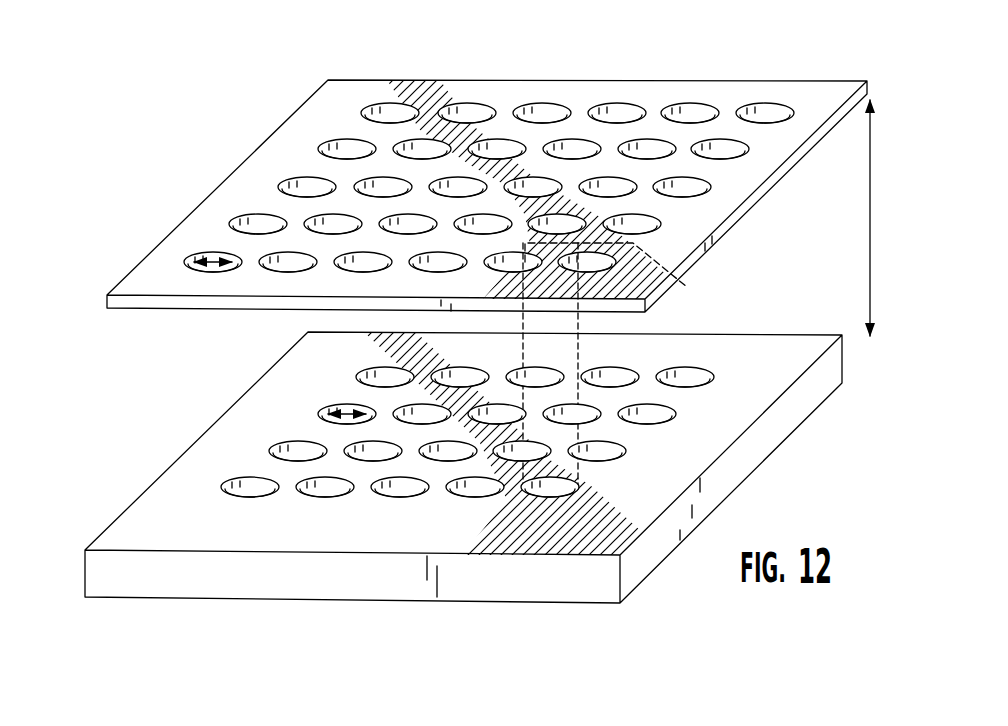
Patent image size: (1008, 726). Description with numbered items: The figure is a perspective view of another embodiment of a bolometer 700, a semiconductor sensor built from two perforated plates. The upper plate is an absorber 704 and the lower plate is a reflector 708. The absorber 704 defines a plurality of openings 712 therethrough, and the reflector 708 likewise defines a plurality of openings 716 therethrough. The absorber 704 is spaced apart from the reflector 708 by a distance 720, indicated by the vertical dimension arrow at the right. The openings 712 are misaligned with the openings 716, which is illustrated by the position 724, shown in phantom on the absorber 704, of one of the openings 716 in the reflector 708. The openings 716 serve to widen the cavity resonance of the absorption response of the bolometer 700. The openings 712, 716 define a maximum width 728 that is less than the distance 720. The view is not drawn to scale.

The bolometer 700 is at (88, 273).
The absorber 704 is at (220, 200).
The reflector 708 is at (168, 467).
The openings 712 is at (307, 184).
The openings 716 is at (250, 479).
The distance 720 is at (870, 233).
The position 724 is at (687, 287).
The maximum width 728 is at (345, 410).